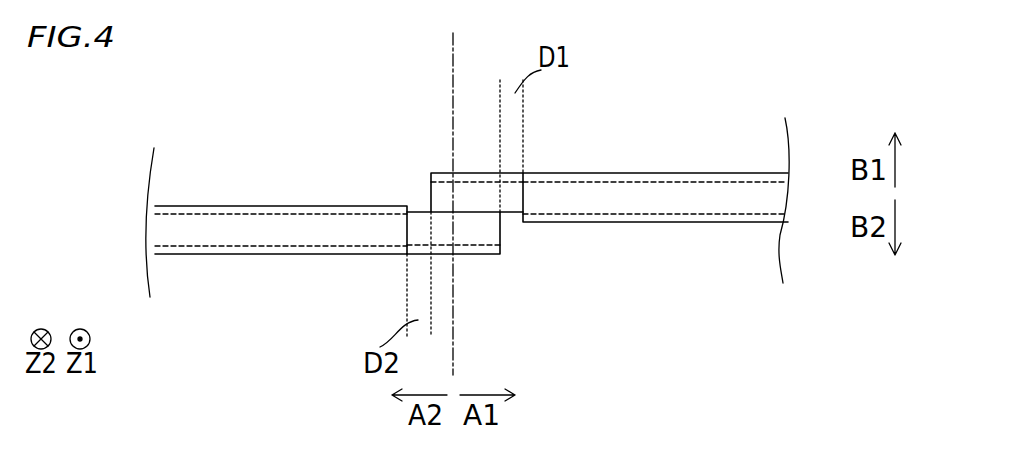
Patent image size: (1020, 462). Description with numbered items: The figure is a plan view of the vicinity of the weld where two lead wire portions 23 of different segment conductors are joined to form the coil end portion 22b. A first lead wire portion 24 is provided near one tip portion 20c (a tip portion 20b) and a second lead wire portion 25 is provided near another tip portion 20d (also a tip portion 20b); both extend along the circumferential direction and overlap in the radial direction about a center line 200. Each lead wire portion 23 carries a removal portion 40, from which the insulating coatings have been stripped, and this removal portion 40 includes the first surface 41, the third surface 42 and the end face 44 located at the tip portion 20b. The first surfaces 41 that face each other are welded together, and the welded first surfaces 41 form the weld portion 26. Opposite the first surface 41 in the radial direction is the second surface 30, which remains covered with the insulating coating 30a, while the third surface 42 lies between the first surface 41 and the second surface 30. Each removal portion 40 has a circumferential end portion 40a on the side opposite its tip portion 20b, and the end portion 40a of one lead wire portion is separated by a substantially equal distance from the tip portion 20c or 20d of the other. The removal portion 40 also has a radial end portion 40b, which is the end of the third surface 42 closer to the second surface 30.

The lead wire portion 23 is at (467, 197).
The first lead wire portion 24 is at (753, 172).
The second lead wire portion 25 is at (228, 206).
The removal portion 40 is at (347, 45).
The first surface 41 is at (439, 195).
The third surface 42 is at (434, 178).
The end face 44 is at (428, 203).
The end portion 40a is at (535, 194).
The end portion 40b is at (477, 210).
The second surface 30 is at (457, 205).
The insulating coating 30a is at (675, 172).
The weld portion 26 is at (527, 197).
The tip portion 20b is at (468, 213).
The tip portion 20c is at (423, 198).
The tip portion 20d is at (505, 214).
The coil end portion 22b is at (647, 299).
The center line 200 is at (462, 50).